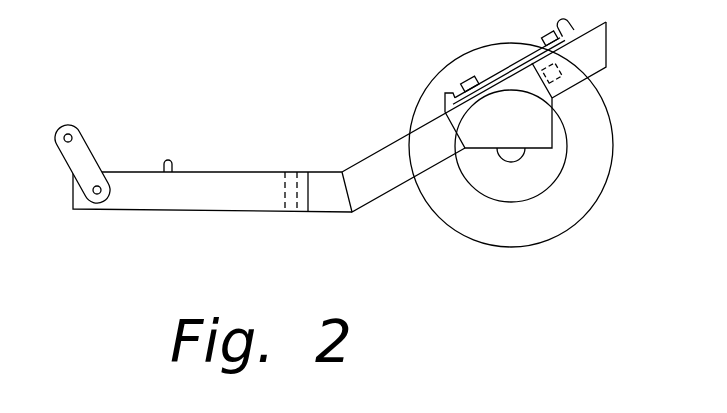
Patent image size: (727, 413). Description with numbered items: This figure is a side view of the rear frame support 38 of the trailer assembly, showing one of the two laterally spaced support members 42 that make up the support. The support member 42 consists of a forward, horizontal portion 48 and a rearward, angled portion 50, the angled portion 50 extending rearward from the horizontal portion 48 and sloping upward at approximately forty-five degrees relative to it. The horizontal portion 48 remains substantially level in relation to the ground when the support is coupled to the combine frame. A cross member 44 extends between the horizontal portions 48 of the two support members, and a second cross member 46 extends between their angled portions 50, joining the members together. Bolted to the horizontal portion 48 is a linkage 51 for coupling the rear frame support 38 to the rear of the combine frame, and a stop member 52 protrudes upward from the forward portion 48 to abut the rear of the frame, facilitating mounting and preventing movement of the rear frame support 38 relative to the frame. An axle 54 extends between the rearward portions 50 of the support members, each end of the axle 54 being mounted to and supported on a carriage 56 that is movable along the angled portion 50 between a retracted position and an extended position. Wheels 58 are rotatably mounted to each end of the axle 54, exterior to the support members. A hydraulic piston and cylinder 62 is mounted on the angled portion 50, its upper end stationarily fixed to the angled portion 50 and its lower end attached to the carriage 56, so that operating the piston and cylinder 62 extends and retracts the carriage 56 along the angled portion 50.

The rear frame support 38 is at (323, 100).
The support member 42 is at (370, 193).
The cross member 44 is at (297, 180).
The cross member 46 is at (562, 77).
The horizontal portion 48 is at (227, 200).
The angled portion 50 is at (608, 37).
The linkage 51 is at (80, 152).
The stop member 52 is at (182, 146).
The axle 54 is at (515, 155).
The carriage 56 is at (542, 121).
The wheels 58 is at (592, 153).
The hydraulic piston and cylinder 62 is at (538, 43).